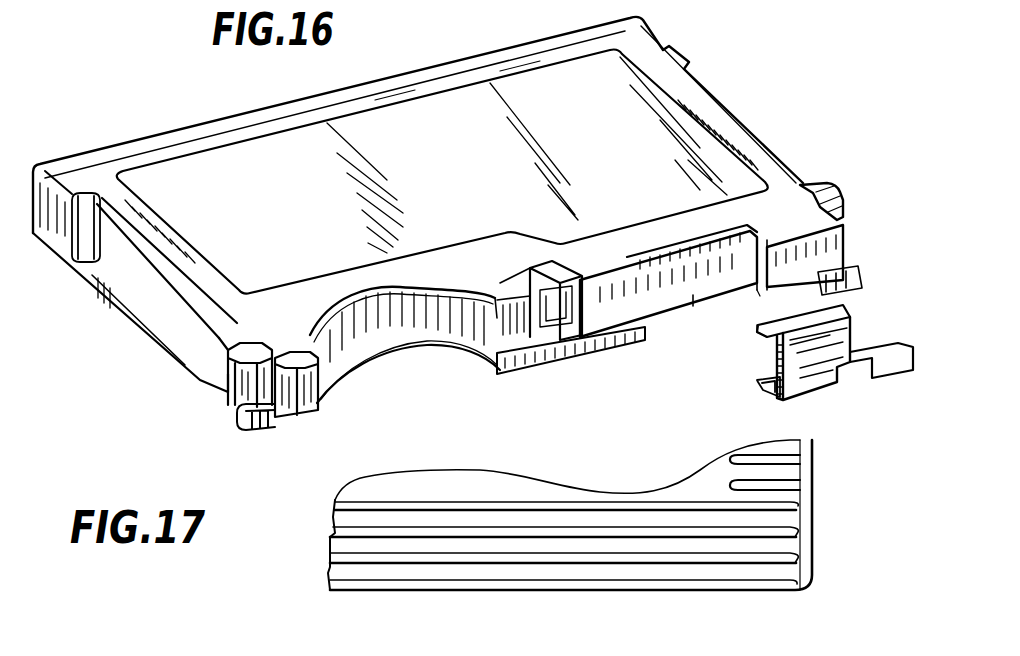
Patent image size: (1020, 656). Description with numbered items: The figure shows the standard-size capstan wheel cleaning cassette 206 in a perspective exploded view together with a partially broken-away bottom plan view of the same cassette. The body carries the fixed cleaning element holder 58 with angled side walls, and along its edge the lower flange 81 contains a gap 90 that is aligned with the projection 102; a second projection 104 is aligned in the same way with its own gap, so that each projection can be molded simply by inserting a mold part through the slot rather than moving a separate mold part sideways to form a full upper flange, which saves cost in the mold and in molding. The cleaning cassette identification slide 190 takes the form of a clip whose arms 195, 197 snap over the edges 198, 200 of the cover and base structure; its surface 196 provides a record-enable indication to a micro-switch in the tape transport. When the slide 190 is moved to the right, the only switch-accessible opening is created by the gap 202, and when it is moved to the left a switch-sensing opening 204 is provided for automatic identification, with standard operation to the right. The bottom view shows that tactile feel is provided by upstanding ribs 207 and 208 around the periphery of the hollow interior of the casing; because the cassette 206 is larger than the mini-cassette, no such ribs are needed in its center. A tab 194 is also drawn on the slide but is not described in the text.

In FIG. 16, the capstan wheel cleaning cassette 206 is at (418, 210).
In FIG. 16, the projection 104 is at (803, 195).
In FIG. 16, the surface 196 is at (827, 260).
In FIG. 16, the edge 198 is at (673, 255).
In FIG. 16, the fixed cleaning element holder 58 is at (533, 263).
In FIG. 16, the projection 102 is at (253, 340).
In FIG. 16, the lower flange 81 is at (140, 310).
In FIG. 16, the gap 90 is at (233, 393).
In FIG. 16, the edge 200 is at (690, 312).
In FIG. 16, the gap 202 is at (760, 297).
In FIG. 16, the switch-sensing opening 204 is at (804, 283).
In FIG. 16, the arm 197 is at (767, 337).
In FIG. 16, the bracket tab 194 is at (885, 358).
In FIG. 16, the arm 195 is at (770, 395).
In FIG. 16, the cleaning cassette identification slide 190 is at (810, 393).
In FIG. 17, the upstanding rib 207 is at (632, 503).
In FIG. 17, the upstanding rib 208 is at (790, 487).